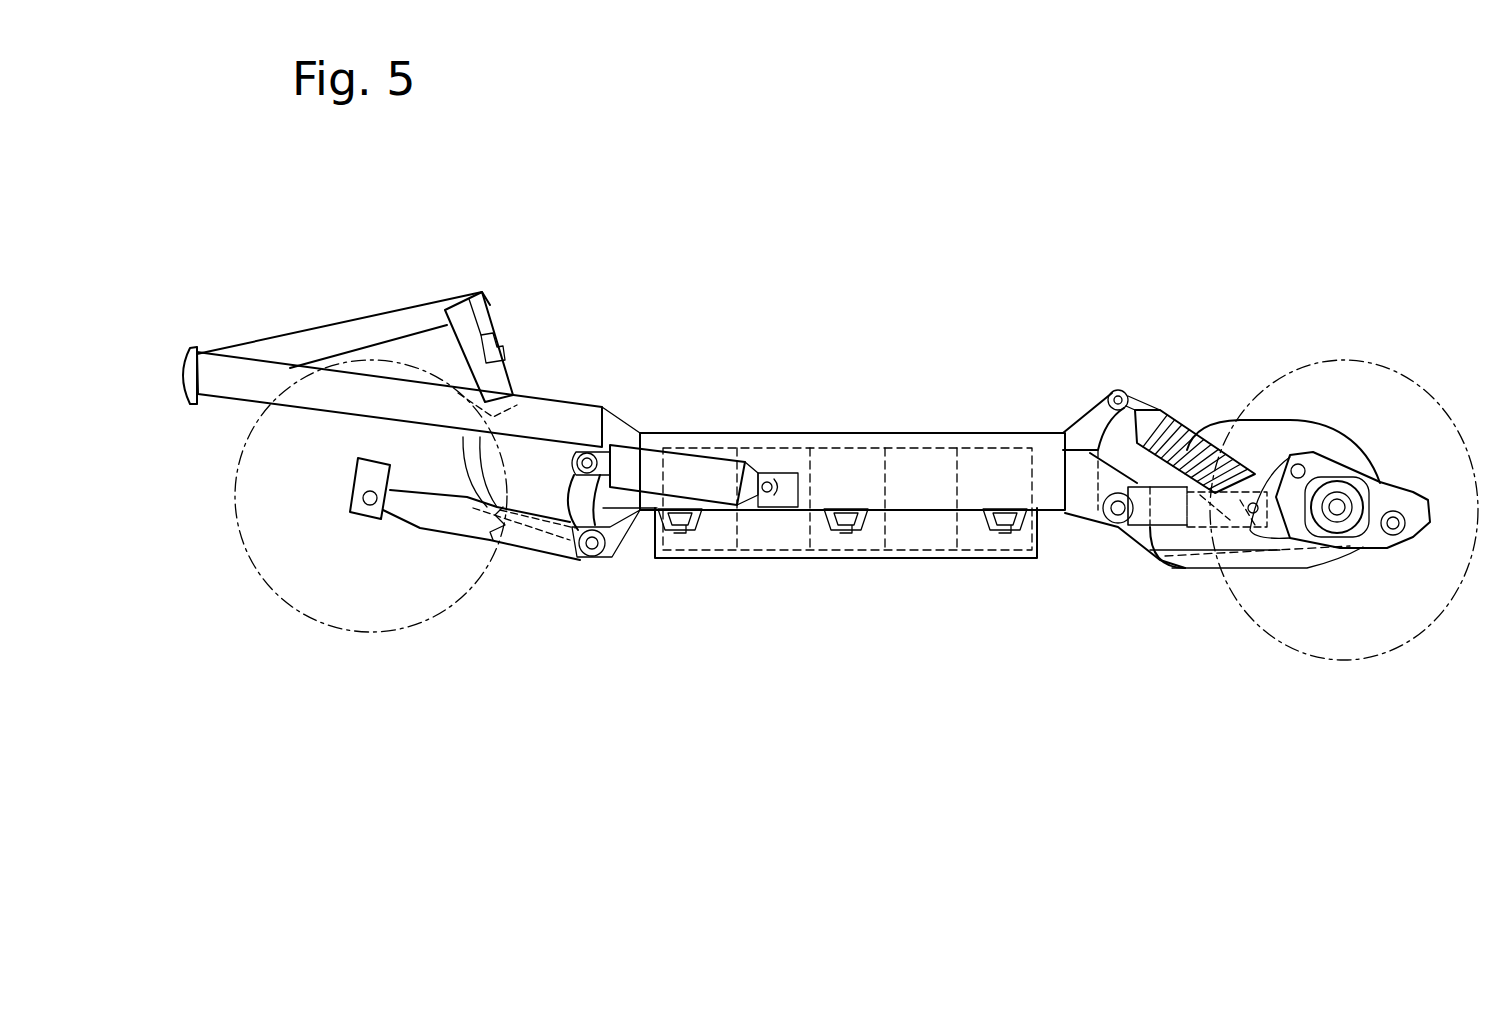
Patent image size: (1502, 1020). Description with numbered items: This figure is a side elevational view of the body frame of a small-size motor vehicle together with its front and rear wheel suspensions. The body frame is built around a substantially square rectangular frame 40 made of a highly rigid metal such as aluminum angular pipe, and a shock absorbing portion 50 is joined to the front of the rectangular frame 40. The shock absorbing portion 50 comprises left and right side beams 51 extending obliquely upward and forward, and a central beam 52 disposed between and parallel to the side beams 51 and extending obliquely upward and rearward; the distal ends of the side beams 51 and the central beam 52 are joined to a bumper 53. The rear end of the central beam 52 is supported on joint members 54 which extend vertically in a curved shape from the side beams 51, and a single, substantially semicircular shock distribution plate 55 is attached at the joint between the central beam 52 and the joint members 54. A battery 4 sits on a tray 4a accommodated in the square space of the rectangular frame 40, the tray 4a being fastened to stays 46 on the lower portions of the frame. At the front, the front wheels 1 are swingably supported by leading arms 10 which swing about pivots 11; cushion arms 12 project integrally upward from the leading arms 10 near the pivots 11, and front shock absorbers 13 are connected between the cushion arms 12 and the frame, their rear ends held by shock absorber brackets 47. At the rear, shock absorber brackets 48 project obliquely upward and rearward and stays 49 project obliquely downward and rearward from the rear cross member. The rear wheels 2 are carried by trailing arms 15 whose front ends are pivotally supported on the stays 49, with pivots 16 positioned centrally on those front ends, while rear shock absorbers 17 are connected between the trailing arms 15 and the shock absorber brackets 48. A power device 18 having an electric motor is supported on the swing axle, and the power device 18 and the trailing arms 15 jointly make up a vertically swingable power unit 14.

The front wheels 1 is at (470, 587).
The rear wheels 2 is at (1287, 650).
The battery 4 is at (983, 560).
The tray 4a is at (910, 540).
The leading arms 10 is at (437, 528).
The pivots 11 is at (605, 558).
The cushion arms 12 is at (567, 490).
The front shock absorbers 13 is at (690, 455).
The power unit 14 is at (1282, 582).
The trailing arms 15 is at (1158, 530).
The pivots 16 is at (1113, 527).
The rear shock absorbers 17 is at (1185, 395).
The power device 18 is at (1340, 432).
The rectangular frame 40 is at (875, 418).
The stays 46 is at (835, 520).
The shock absorber brackets 47 is at (784, 507).
The shock absorber brackets 48 is at (1085, 405).
The stays 49 is at (1090, 525).
The shock absorbing portion 50 is at (436, 364).
The side beams 51 is at (225, 406).
The central beam 52 is at (307, 337).
The bumper 53 is at (180, 348).
The joint members 54 is at (507, 372).
The shock distribution plate 55 is at (493, 310).